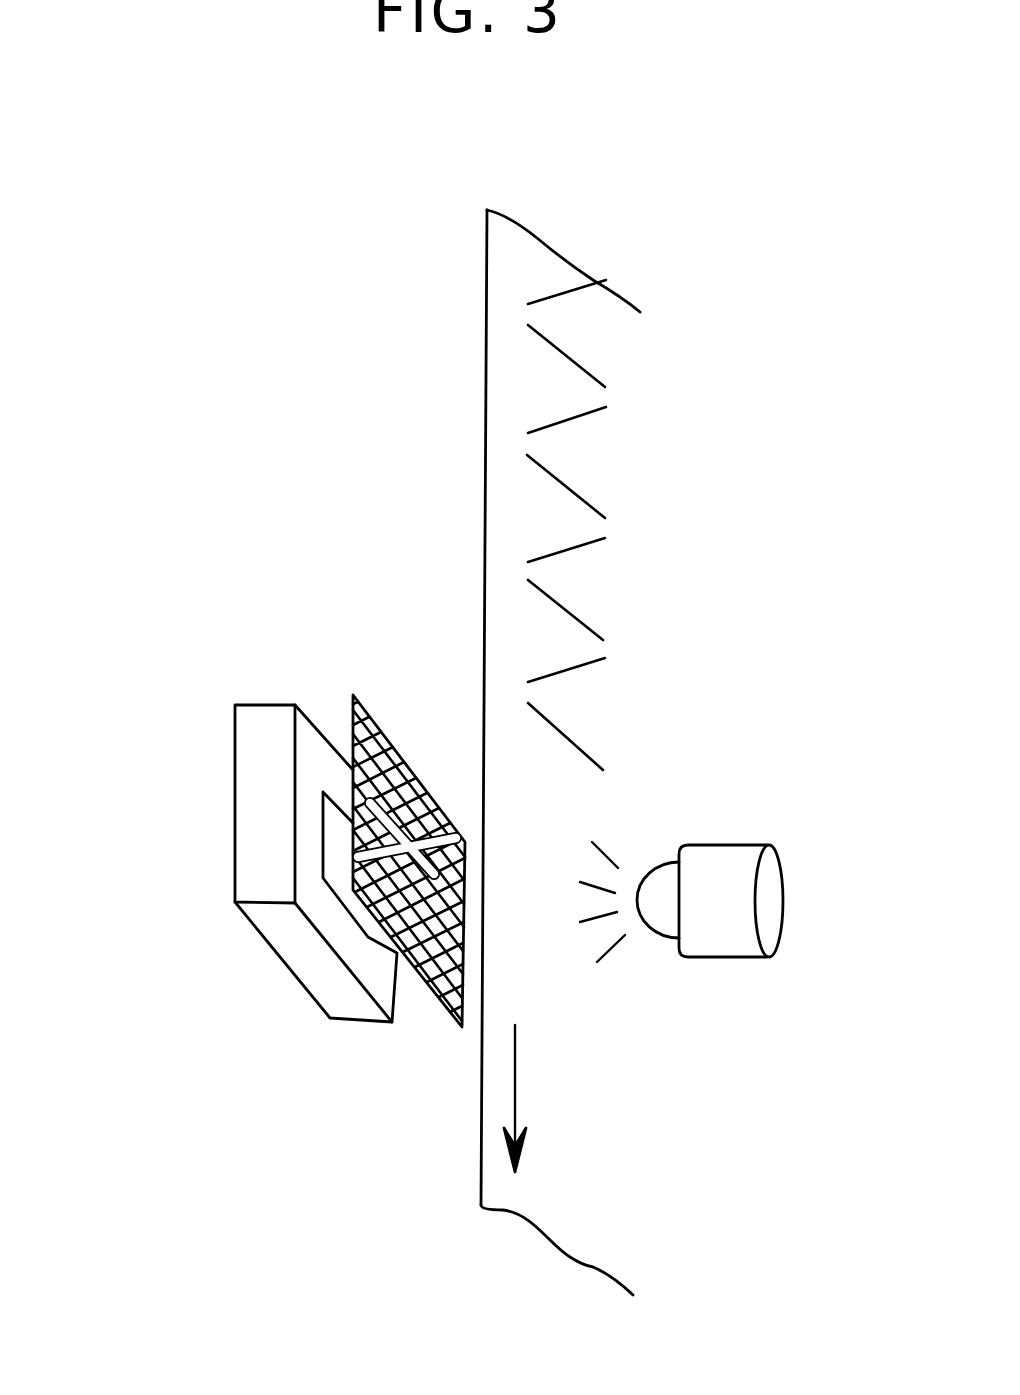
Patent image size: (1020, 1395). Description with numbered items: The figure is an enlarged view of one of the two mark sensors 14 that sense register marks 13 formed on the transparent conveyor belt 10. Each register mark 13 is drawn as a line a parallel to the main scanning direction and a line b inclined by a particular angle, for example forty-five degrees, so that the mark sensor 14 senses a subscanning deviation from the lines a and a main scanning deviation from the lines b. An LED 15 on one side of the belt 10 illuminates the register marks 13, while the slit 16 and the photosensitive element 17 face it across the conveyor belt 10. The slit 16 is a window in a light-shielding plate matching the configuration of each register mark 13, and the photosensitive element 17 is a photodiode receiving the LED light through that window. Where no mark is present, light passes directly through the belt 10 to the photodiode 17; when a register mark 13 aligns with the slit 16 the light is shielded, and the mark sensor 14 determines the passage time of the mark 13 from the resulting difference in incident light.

The conveyor belt 10 is at (495, 290).
The register mark 13 is at (668, 528).
The mark sensor 14 is at (265, 863).
The photosensitive element (light emitting element) 15 is at (715, 943).
The slit 16 is at (398, 737).
The photosensitive element 17 is at (330, 998).